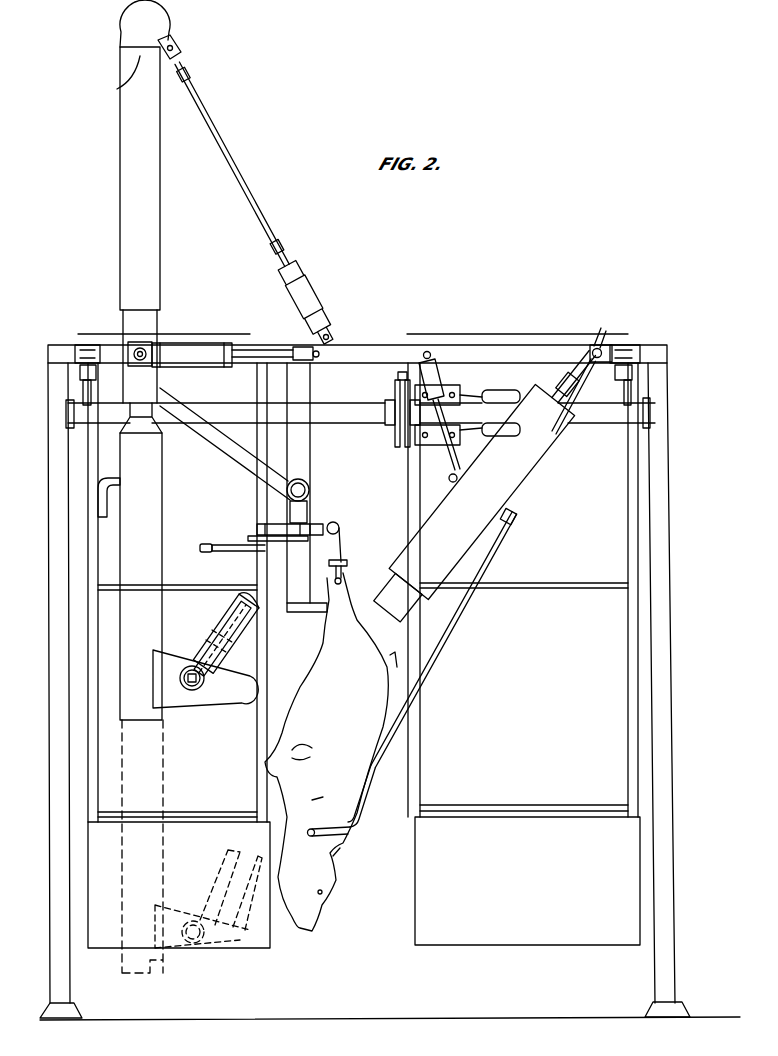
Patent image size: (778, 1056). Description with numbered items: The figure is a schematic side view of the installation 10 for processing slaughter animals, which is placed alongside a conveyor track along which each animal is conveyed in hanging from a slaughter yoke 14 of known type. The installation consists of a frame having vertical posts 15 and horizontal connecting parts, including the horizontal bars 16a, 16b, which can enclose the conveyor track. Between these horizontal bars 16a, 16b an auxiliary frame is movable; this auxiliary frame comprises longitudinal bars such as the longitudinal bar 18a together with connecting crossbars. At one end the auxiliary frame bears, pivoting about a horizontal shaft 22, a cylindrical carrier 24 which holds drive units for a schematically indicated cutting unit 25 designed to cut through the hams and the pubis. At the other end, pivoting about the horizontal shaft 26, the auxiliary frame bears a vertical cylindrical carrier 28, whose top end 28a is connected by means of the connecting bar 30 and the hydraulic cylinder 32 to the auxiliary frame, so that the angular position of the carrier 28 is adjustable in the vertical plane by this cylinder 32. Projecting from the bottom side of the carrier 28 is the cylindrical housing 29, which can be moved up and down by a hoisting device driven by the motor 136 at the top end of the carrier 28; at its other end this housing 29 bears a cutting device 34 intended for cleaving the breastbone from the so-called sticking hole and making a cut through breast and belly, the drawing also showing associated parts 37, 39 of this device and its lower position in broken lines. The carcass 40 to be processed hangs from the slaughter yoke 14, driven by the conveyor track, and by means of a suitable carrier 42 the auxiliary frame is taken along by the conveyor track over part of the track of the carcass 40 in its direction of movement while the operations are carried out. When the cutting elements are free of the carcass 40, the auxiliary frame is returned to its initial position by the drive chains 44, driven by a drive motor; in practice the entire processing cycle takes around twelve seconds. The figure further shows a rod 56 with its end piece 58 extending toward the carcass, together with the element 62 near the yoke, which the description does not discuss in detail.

The installation 10 is at (401, 258).
The slaughter yoke 14 is at (68, 979).
The vertical post 15 is at (665, 955).
The horizontal bar 16a is at (655, 345).
The horizontal bar 16b is at (56, 344).
The longitudinal bar 18a is at (355, 345).
The horizontal shaft 22 is at (594, 343).
The cylindrical carrier 24 is at (538, 468).
The cutting unit 25 is at (402, 597).
The horizontal shaft 26 is at (121, 342).
The vertical cylindrical carrier 28 is at (123, 275).
The top end of the carrier 28a is at (117, 89).
The cylindrical housing 29 is at (158, 497).
The connecting bar 30 is at (220, 143).
The hydraulic cylinder 32 is at (303, 292).
The cutting device 34 is at (228, 690).
The bar 37 is at (238, 640).
The shell 39 is at (258, 648).
The carcass 40 is at (370, 777).
The carrier 42 is at (318, 520).
The drive chains 44 is at (396, 446).
The rod 56 is at (455, 635).
The handle 58 is at (349, 836).
The carcass 62 is at (324, 600).
The motor 136 is at (122, 16).